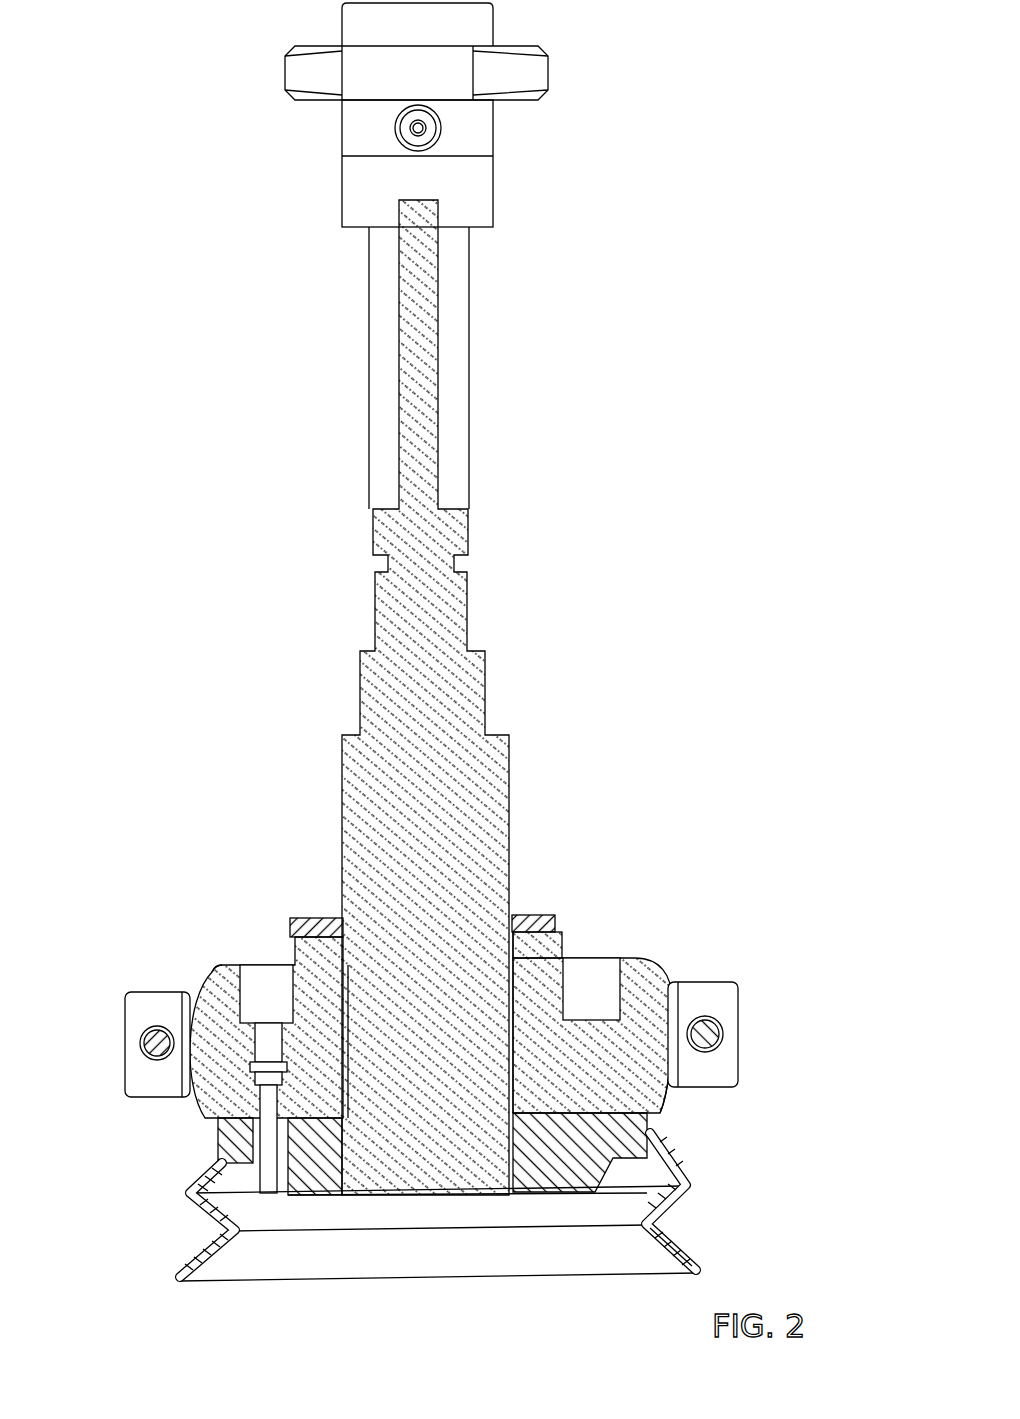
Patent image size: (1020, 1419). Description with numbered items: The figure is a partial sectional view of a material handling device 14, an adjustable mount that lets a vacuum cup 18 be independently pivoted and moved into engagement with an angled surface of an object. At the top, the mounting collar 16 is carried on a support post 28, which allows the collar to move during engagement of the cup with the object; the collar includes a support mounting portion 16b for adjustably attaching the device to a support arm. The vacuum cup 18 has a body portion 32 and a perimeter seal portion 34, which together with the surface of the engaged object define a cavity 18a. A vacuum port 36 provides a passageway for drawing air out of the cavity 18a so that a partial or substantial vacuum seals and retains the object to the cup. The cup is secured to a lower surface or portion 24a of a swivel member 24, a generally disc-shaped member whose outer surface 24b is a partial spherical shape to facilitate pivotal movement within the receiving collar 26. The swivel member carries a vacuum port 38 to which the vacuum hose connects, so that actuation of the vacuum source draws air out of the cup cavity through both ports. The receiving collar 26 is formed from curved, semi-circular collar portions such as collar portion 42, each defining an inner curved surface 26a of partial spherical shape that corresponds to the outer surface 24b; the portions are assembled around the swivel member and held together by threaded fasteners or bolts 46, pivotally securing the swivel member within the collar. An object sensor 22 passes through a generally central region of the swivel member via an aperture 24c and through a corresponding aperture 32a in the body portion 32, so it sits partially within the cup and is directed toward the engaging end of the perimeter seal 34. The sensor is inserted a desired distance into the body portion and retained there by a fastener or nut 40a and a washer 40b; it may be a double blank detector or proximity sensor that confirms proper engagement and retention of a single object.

The material handling device 14 is at (270, 519).
The mounting collar 16 is at (562, 104).
The support mounting portion 16b is at (497, 143).
The support post 28 is at (470, 365).
The object sensor 22 is at (480, 775).
The receiving collar 26 is at (728, 980).
The inner curved surface 26a is at (203, 1012).
The vacuum port 38 is at (262, 978).
The fastener or nut 40a is at (322, 917).
The washer 40b is at (535, 935).
The swivel member 24 is at (647, 957).
The aperture 24c is at (520, 992).
The outer surface 24b is at (673, 1007).
The collar portion 42 is at (733, 1068).
The threaded fastener 46 is at (707, 1032).
The lower surface or portion 24a is at (235, 1120).
The body portion 32 is at (645, 1128).
The aperture 32a is at (484, 1195).
The vacuum port 36 is at (275, 1160).
The vacuum cup 18 is at (480, 1228).
The cavity 18a is at (410, 1255).
The perimeter seal portion 34 is at (690, 1253).